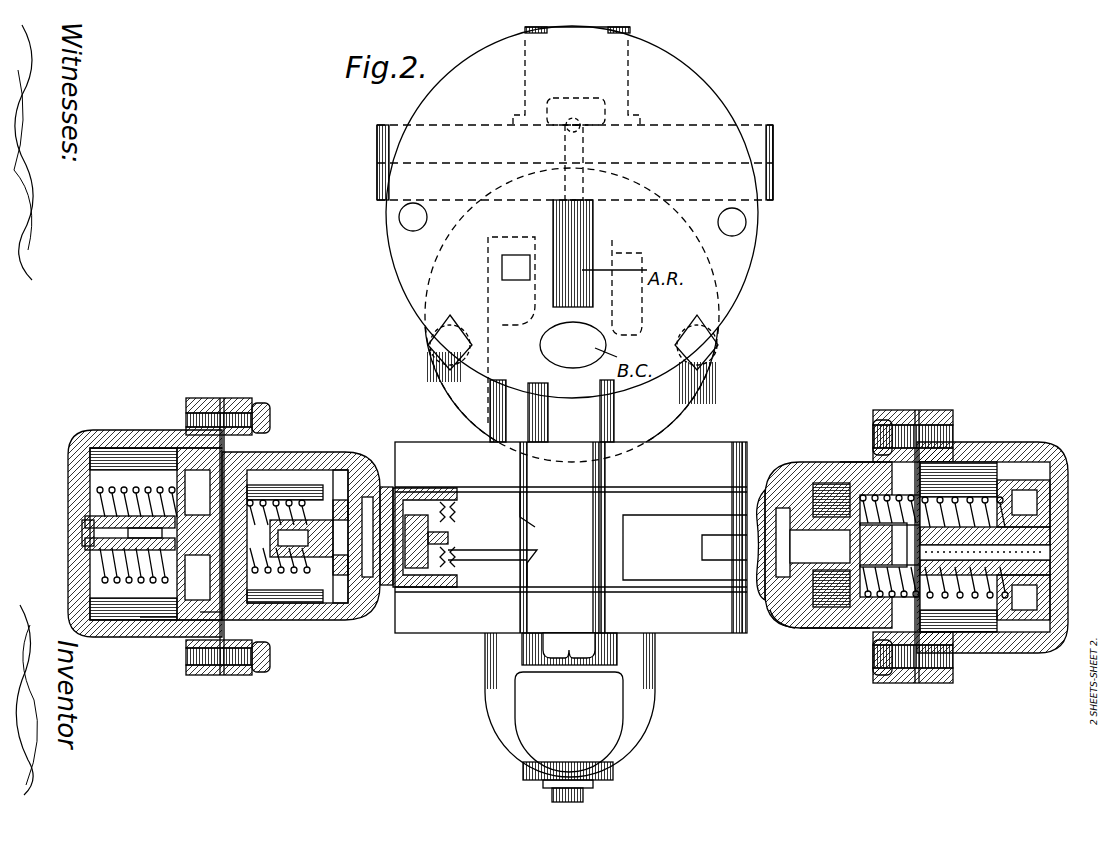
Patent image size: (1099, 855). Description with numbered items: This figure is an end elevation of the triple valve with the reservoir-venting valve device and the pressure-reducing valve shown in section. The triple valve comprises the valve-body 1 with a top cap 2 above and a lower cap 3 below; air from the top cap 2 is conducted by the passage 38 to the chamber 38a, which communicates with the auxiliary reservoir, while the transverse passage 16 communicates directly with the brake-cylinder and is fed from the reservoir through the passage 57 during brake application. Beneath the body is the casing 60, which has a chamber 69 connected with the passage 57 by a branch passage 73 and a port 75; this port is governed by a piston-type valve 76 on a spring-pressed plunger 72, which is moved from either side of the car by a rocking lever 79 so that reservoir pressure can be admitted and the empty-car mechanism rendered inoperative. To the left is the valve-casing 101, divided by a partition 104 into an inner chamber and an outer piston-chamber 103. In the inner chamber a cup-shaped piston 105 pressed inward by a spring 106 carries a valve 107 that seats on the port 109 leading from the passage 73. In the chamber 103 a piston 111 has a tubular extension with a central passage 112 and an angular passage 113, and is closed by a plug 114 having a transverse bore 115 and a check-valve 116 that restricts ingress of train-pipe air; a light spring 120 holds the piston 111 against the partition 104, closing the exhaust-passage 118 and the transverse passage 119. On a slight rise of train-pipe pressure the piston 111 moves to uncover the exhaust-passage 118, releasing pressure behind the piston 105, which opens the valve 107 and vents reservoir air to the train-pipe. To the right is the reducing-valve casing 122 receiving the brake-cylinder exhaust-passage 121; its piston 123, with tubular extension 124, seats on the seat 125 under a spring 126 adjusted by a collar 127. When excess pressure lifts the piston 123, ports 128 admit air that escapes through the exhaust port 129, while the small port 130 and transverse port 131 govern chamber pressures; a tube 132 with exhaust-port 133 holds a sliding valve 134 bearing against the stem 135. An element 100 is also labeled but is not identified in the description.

The valve-body 1 is at (707, 395).
The top cap 2 is at (773, 147).
The lower cap 3 is at (458, 627).
The transverse passage 16 is at (573, 345).
The passage 38 is at (565, 185).
The chamber 38a is at (590, 222).
The auxiliary-reservoir passage 57 is at (504, 270).
The casing 60 is at (543, 513).
The chamber 69 is at (452, 500).
The plunger 72 is at (442, 538).
The branch passage 73 is at (367, 577).
The port 75 is at (388, 598).
The valve 76 is at (415, 500).
The rocking lever 79 is at (723, 553).
The spring 100 is at (266, 527).
The valve-casing 101 is at (285, 452).
The outer piston-chamber 103 is at (103, 457).
The partition 104 is at (188, 443).
The cup-shaped piston 105 is at (302, 483).
The spring 106 is at (266, 571).
The valve 107 is at (322, 547).
The port and passage 109 is at (345, 540).
The piston 111 is at (153, 617).
The central passage 112 is at (134, 580).
The angular passage 113 is at (72, 467).
The plug 114 is at (100, 547).
The transverse bore 115 is at (90, 497).
The check-valve 116 is at (90, 532).
The exhaust-passage 118 is at (213, 612).
The transverse passage 119 is at (160, 490).
The spring 120 is at (92, 578).
The exhaust-passage 121 is at (772, 478).
The casing 122 is at (1007, 443).
The piston 123 is at (830, 630).
The tubular extension 124 is at (788, 625).
The seat 125 is at (820, 546).
The spring 126 is at (957, 597).
The adjustable collar 127 is at (1030, 600).
The ports 128 is at (822, 603).
The exhaust port 129 is at (857, 462).
The small port 130 is at (832, 478).
The transverse port 131 is at (853, 613).
The tube 132 is at (1063, 533).
The exhaust-port 133 is at (1067, 550).
The valve 134 is at (925, 517).
The stem 135 is at (889, 546).